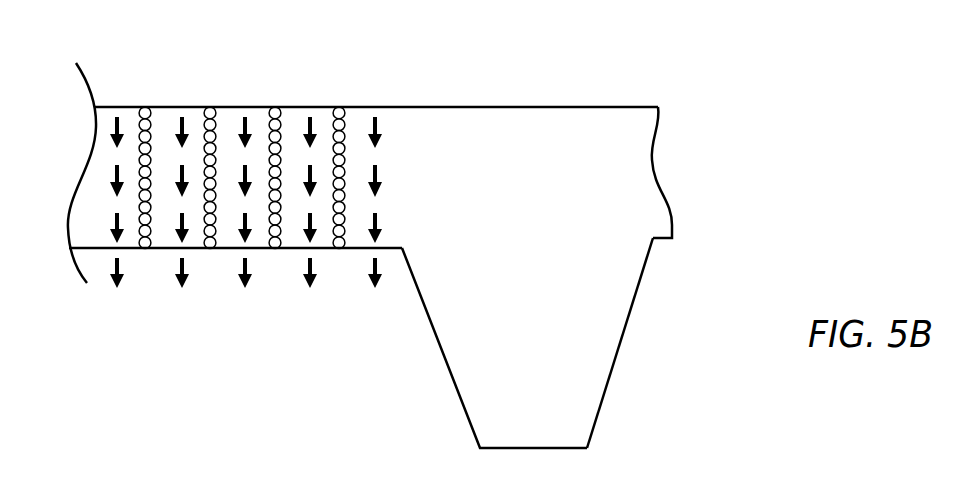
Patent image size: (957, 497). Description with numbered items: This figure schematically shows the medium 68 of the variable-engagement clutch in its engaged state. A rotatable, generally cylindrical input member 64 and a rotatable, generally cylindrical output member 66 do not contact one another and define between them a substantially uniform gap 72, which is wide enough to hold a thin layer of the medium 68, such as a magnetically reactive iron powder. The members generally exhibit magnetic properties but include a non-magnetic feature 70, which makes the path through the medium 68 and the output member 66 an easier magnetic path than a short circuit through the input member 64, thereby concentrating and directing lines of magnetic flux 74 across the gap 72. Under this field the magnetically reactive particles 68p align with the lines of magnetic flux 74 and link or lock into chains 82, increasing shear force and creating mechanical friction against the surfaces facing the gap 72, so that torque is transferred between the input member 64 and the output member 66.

The input member 64 is at (417, 289).
The output member 66 is at (450, 107).
The medium 68 is at (300, 154).
The magnetically reactive particles 68p is at (339, 107).
The non-magnetic feature 70 is at (621, 327).
The gap 72 is at (537, 201).
The lines of magnetic flux 74 is at (185, 139).
The chains 82 is at (154, 151).